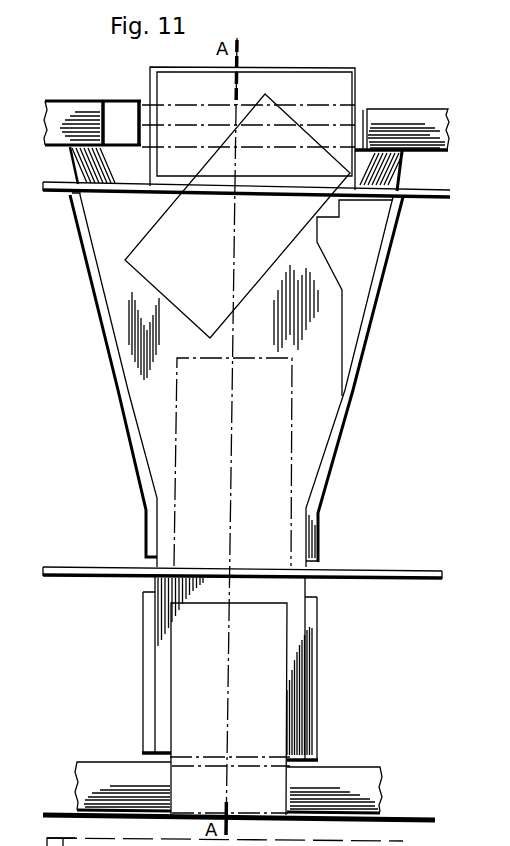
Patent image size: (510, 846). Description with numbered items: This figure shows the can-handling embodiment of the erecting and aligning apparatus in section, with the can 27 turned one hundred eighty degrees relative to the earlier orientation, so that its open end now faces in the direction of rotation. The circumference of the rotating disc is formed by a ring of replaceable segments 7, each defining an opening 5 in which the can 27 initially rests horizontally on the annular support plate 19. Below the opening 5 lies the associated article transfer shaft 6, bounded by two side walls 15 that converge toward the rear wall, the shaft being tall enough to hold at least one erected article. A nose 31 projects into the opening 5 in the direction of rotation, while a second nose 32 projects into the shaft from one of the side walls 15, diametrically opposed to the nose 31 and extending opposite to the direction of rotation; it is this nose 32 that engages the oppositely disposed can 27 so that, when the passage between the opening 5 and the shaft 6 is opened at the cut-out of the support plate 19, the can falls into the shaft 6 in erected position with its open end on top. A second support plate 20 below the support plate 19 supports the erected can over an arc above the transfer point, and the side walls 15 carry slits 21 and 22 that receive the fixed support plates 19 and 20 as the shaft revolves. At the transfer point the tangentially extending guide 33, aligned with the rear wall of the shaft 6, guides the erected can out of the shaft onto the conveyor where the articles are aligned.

The opening 5 is at (362, 117).
The article transfer shaft 6 is at (322, 347).
The segment 7 is at (432, 117).
The side wall 15 is at (110, 348).
The annular support plate 19 is at (60, 195).
The support plate 20 is at (90, 579).
The slit 21 is at (321, 586).
The slit 22 is at (411, 157).
The can 27 is at (343, 87).
The nose 31 is at (117, 118).
The nose 32 is at (362, 262).
The tangentially extending guide 33 is at (343, 782).